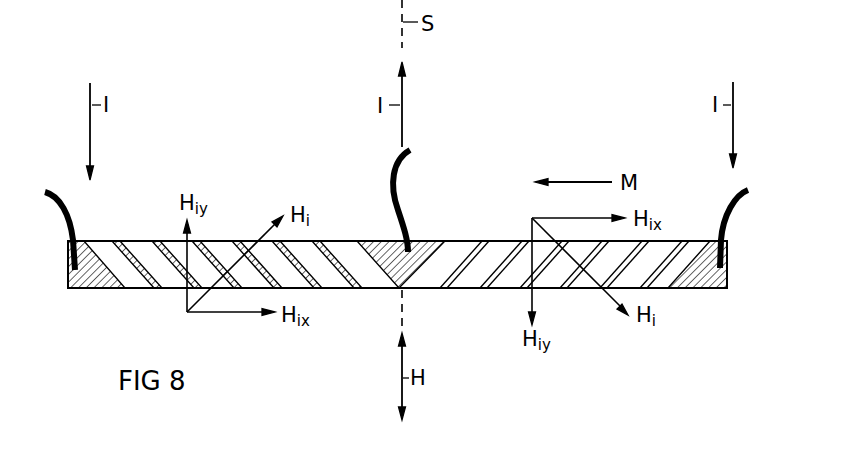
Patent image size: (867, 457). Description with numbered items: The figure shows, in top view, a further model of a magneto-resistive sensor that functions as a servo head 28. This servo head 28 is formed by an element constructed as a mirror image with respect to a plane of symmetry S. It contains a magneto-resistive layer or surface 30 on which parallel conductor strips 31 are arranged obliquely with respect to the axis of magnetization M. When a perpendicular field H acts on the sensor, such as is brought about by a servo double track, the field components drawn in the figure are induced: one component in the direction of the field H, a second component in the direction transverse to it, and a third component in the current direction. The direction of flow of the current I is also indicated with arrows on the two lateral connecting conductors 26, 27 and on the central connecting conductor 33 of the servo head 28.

The lateral connecting conductor 26 is at (71, 212).
The lateral connecting conductor 27 is at (737, 209).
The servo head 28 is at (771, 272).
The magneto-resistive layer 30 is at (296, 284).
The parallel conductor strips 31 is at (504, 260).
The central connecting conductor 33 is at (412, 190).